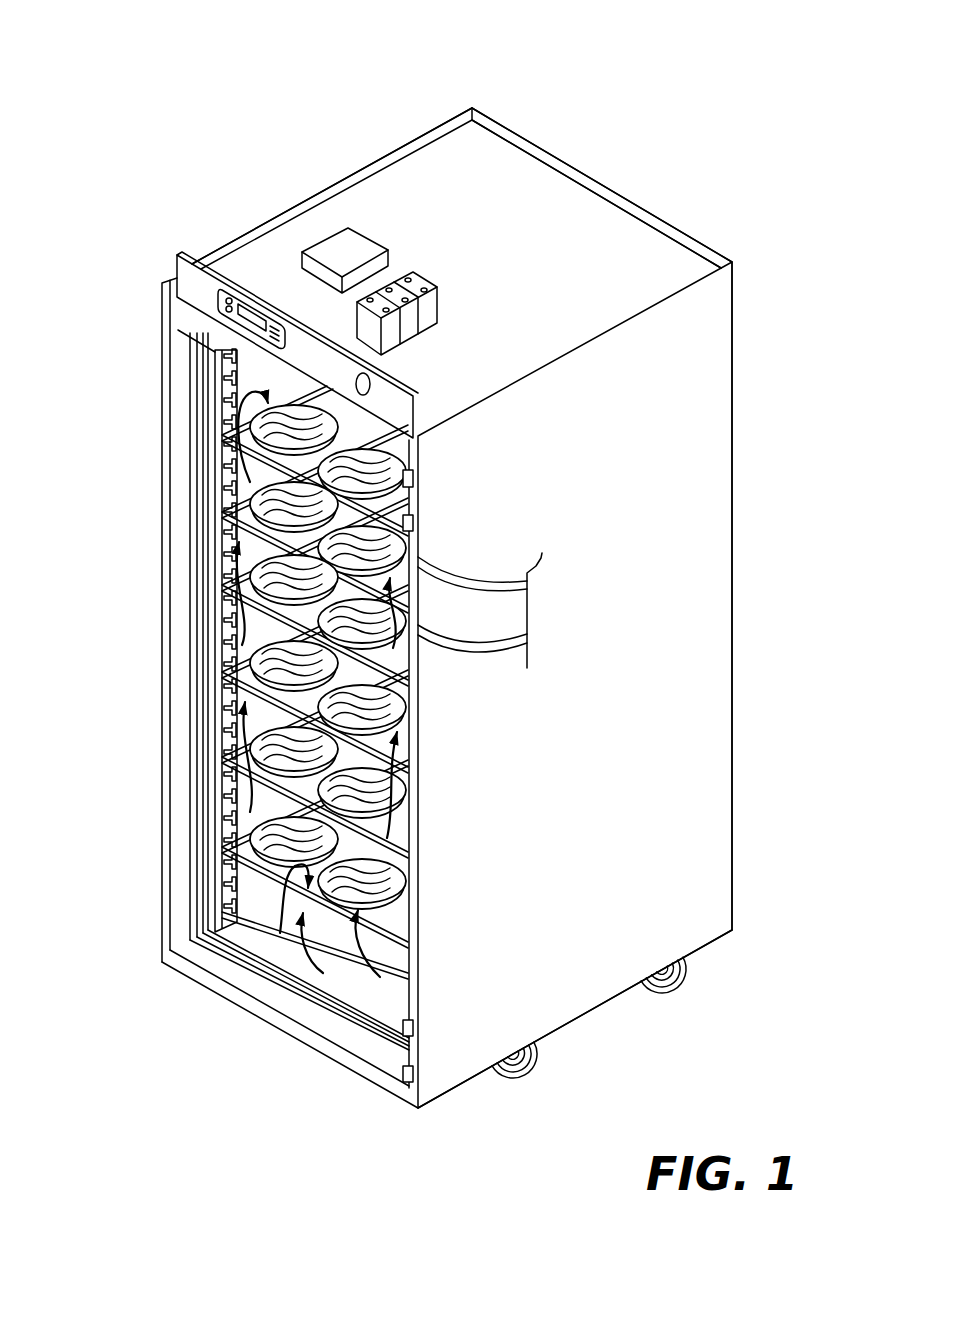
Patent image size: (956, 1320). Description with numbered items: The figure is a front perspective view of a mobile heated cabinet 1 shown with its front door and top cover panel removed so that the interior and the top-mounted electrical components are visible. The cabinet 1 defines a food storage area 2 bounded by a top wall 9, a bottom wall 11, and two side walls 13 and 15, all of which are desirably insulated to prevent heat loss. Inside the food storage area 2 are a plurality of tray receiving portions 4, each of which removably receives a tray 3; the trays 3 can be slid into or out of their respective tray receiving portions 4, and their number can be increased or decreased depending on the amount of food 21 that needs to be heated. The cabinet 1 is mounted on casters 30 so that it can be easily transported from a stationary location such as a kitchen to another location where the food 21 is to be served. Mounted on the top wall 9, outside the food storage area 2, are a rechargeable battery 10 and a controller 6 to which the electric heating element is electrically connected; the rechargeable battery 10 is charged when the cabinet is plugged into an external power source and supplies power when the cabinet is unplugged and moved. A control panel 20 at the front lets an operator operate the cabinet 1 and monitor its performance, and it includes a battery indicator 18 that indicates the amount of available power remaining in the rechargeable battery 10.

The mobile heated cabinet 1 is at (310, 92).
The food storage area 2 is at (250, 378).
The tray 3 is at (541, 560).
The tray receiving portion 4 is at (228, 400).
The controller 6 is at (355, 243).
The top wall 9 is at (592, 282).
The rechargeable battery 10 is at (432, 284).
The bottom wall 11 is at (590, 1020).
The side wall 13 is at (161, 655).
The side wall 15 is at (712, 600).
The battery indicator 18 is at (372, 380).
The control panel 20 is at (213, 292).
The food 21 is at (415, 465).
The caster 30 is at (688, 963).